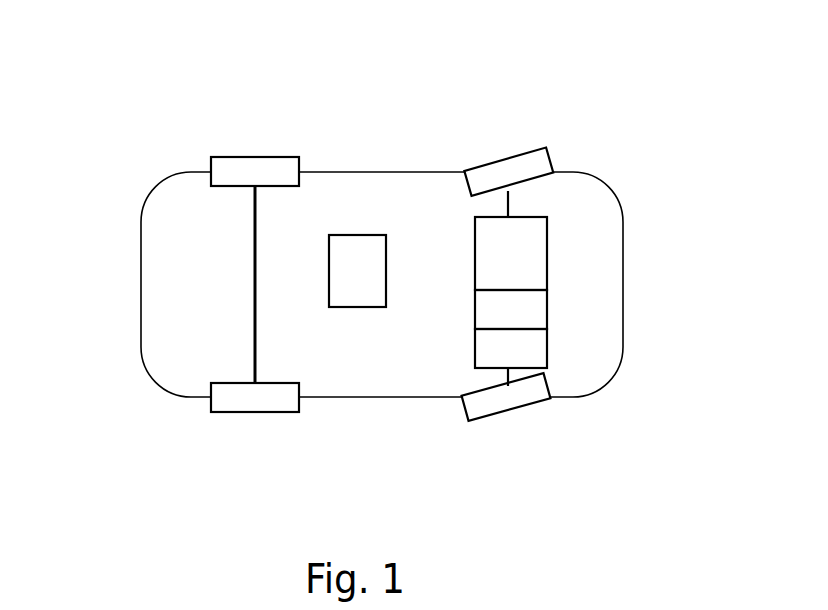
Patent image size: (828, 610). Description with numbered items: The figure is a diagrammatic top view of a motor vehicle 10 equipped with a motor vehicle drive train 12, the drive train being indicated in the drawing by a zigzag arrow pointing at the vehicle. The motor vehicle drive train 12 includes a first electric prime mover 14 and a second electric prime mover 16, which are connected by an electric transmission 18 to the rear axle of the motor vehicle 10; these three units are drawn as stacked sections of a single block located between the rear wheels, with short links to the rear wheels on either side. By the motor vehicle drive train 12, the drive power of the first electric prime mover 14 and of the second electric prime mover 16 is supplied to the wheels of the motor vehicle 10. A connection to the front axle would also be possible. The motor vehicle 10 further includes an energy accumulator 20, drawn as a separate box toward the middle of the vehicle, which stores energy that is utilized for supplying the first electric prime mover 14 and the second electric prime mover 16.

The motor vehicle 10 is at (143, 313).
The motor vehicle drive train 12 is at (470, 59).
The first electric prime mover 14 is at (547, 337).
The second electric prime mover 16 is at (547, 312).
The electric transmission 18 is at (475, 237).
The energy accumulator 20 is at (357, 235).